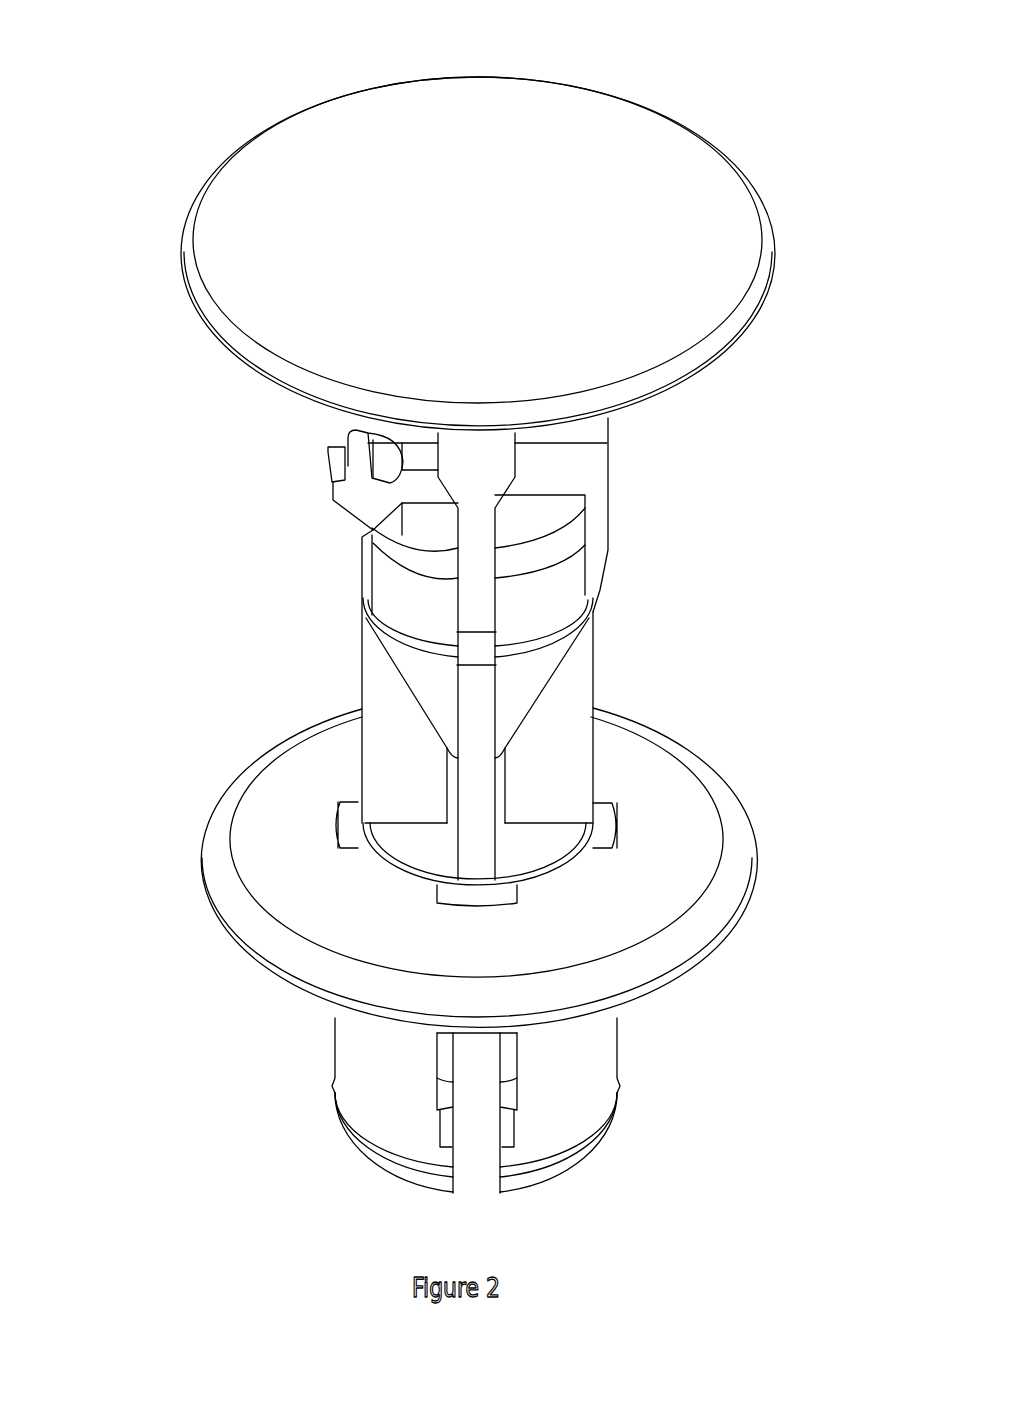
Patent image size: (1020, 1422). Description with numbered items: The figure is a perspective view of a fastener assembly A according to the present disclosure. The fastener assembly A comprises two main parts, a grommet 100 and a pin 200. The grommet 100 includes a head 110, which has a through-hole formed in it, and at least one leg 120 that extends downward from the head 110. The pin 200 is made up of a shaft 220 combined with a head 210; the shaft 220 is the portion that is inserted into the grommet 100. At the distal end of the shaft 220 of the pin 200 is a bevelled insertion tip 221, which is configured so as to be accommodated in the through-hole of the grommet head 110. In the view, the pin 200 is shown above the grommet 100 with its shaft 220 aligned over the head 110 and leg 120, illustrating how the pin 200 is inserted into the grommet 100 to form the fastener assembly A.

The pin 200 is at (410, 453).
The head 210 is at (637, 118).
The shaft 220 is at (414, 752).
The bevelled insertion tip 221 is at (410, 853).
The fastener assembly A is at (726, 506).
The grommet 100 is at (485, 950).
The head 110 is at (725, 912).
The leg 120 is at (610, 1068).